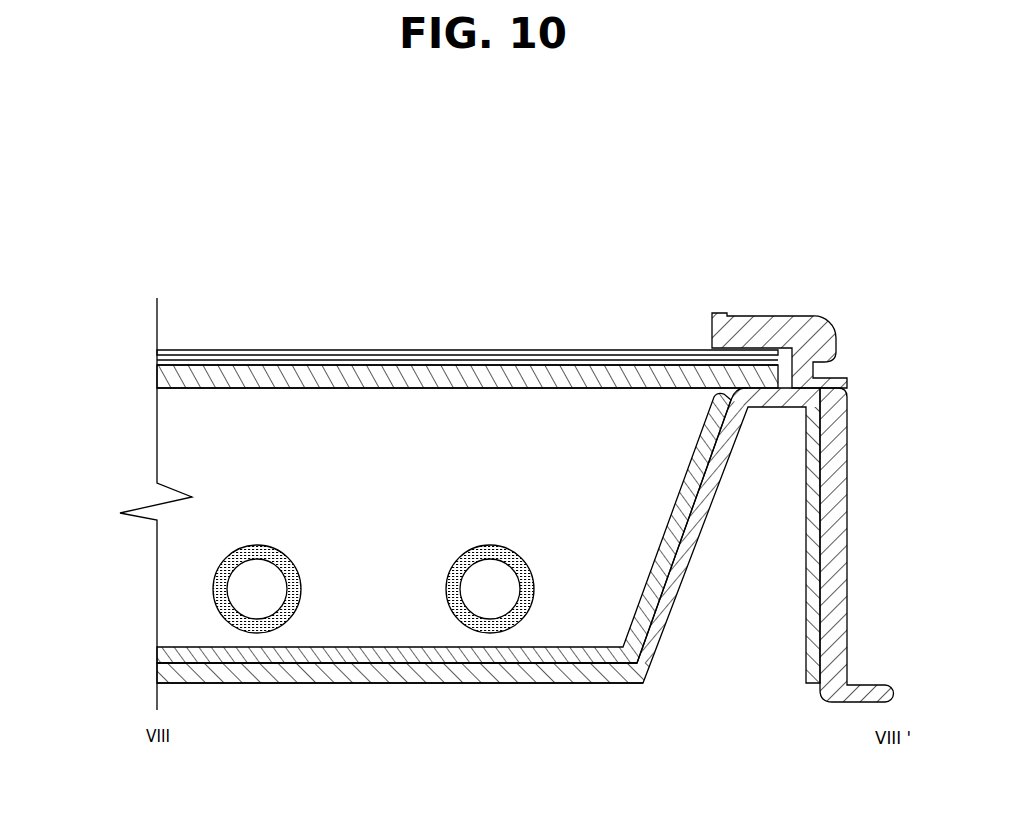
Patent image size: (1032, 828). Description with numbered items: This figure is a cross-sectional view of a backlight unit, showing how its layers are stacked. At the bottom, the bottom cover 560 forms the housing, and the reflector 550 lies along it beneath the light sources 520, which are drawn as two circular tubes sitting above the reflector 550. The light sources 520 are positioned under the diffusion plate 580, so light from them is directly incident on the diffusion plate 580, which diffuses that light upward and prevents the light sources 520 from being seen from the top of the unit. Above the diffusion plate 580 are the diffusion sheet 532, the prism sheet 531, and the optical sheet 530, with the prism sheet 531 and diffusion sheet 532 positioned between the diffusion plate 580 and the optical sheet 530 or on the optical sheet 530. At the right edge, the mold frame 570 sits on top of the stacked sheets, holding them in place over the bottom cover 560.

The light source 520 is at (255, 632).
The optical sheet 530 is at (157, 352).
The prism sheet 531 is at (157, 357).
The diffusion sheet 532 is at (157, 380).
The reflector 550 is at (157, 649).
The bottom cover 560 is at (427, 684).
The mold frame 570 is at (768, 316).
The diffusion plate 580 is at (158, 384).